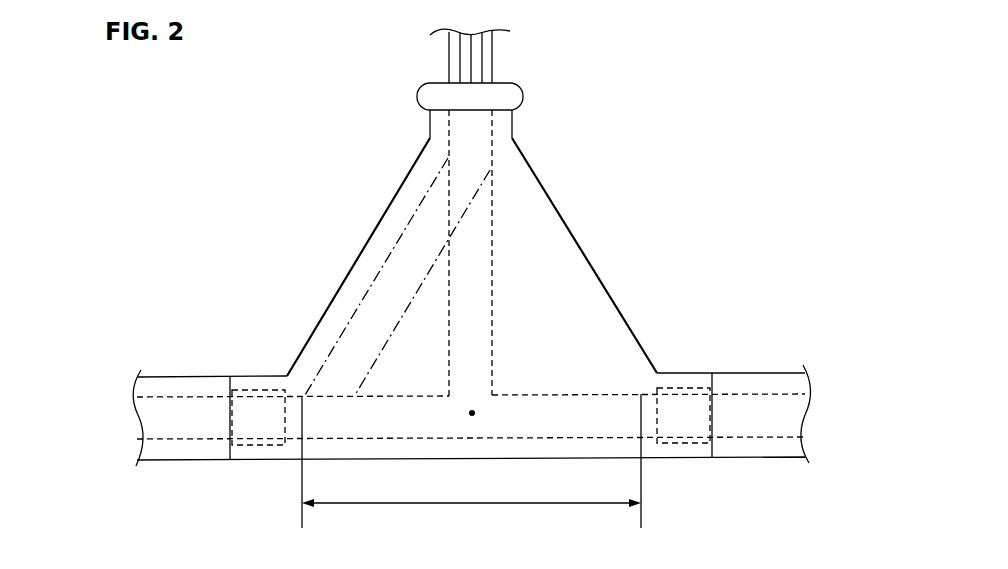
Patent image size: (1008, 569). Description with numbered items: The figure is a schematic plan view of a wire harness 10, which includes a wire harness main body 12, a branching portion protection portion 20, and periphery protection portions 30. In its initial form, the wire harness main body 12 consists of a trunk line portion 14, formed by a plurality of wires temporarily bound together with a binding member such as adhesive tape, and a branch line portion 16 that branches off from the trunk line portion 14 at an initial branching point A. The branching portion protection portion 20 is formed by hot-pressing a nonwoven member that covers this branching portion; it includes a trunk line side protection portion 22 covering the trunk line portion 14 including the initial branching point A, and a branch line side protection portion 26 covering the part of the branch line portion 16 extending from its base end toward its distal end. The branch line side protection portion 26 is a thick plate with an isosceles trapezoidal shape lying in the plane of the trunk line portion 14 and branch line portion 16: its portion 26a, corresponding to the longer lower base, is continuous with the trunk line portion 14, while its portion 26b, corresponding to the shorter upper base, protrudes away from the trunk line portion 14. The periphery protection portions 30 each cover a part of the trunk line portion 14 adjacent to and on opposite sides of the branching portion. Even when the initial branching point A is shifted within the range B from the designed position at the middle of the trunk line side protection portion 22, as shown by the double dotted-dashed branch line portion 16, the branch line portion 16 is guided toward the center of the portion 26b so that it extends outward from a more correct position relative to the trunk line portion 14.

The wire harness 10 is at (471, 278).
The wire harness main body 12 is at (497, 62).
The trunk line portion 14 is at (738, 392).
The branch line portion 16 is at (375, 282).
The branching portion protection portion 20 is at (601, 273).
The trunk line side protection portion 22 is at (662, 448).
The branch line side protection portion 26 is at (600, 318).
The portion corresponding to the lower base 26a is at (595, 360).
The portion corresponding to the upper base 26b is at (500, 110).
The periphery protection portion 30 is at (168, 377).
The initial branching point A is at (473, 410).
The range B is at (471, 518).